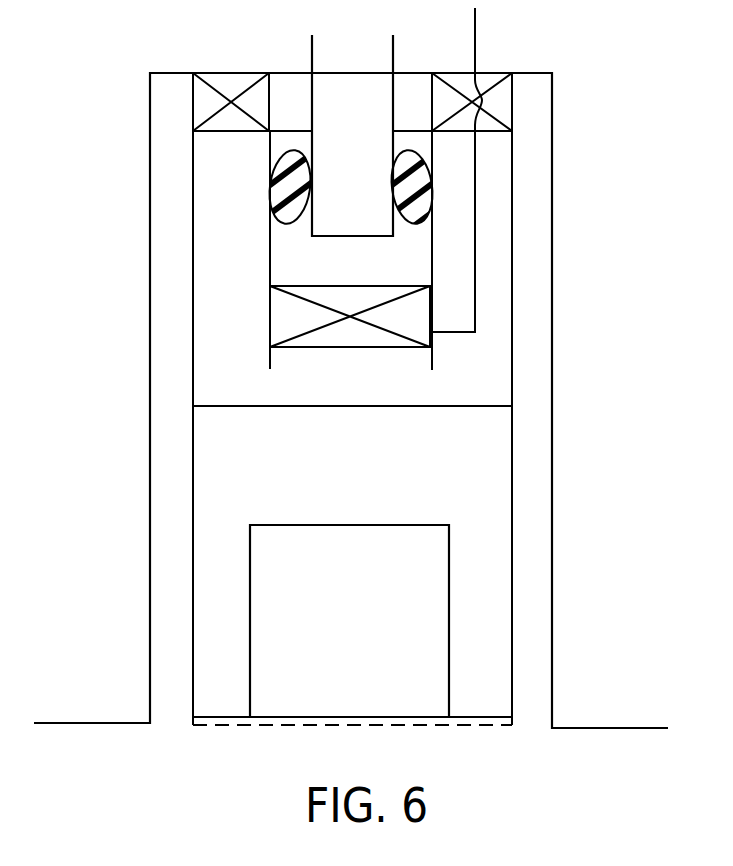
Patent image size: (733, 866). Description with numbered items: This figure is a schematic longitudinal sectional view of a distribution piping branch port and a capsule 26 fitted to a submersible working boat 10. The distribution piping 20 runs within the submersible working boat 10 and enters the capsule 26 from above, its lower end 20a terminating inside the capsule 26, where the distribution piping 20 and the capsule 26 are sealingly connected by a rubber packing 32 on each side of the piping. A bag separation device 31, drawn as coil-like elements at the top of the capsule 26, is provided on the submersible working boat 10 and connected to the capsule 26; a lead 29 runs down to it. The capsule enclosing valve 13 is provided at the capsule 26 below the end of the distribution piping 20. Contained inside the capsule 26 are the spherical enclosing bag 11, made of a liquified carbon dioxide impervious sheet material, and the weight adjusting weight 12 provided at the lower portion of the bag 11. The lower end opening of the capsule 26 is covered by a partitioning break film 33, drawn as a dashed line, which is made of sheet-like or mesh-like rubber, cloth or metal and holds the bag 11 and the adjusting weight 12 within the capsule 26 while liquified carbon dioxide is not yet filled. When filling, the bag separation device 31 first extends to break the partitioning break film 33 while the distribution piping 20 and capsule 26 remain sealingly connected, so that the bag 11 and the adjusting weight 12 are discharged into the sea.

The submersible working boat 10 is at (140, 97).
The bag 11 is at (498, 468).
The adjusting weight 12 is at (449, 603).
The capsule enclosing valve 13 is at (376, 333).
The distribution piping 20 is at (345, 95).
The shaft end face 20a is at (361, 237).
The capsule 26 is at (192, 178).
The lead wire 29 is at (478, 52).
The bag separation device 31 is at (235, 90).
The rubber packing 32 is at (279, 216).
The partitioning break film 33 is at (388, 728).